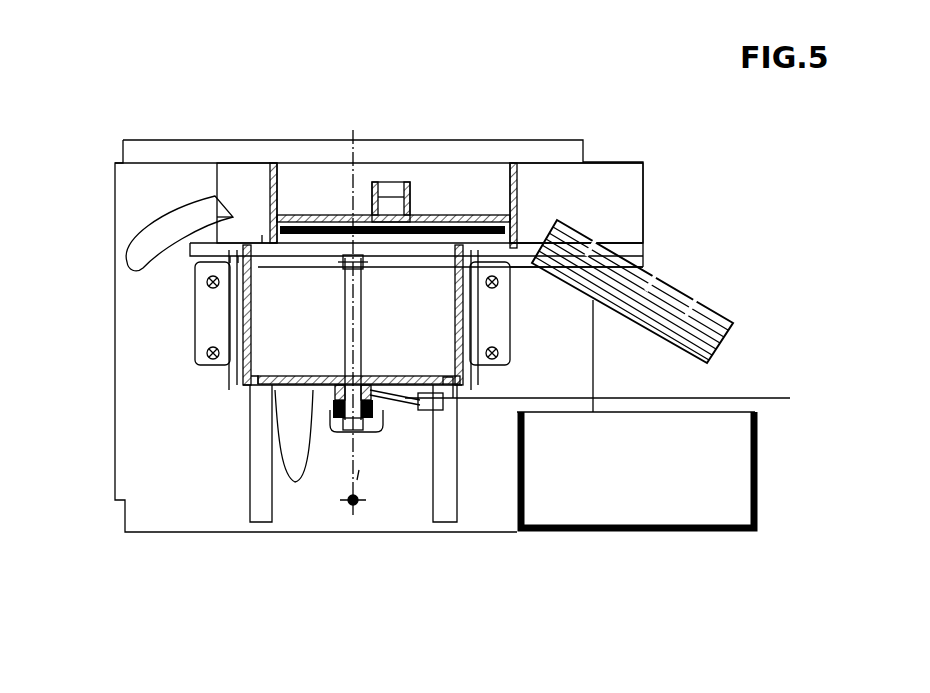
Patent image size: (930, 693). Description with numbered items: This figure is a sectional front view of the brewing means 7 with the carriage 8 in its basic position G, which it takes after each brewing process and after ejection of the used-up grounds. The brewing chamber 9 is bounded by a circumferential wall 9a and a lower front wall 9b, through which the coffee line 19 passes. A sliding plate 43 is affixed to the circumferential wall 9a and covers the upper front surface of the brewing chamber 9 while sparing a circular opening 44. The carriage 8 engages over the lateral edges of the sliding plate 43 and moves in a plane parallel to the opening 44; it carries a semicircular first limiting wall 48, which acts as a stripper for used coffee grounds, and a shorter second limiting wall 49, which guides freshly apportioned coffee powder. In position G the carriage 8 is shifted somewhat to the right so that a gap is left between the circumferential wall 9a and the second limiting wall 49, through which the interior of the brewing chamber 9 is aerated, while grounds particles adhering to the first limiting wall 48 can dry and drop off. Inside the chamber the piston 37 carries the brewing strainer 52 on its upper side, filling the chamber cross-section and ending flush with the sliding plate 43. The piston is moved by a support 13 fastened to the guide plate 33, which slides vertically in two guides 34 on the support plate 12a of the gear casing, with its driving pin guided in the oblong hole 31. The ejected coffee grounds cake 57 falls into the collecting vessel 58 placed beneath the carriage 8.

The brewing means 7 is at (138, 437).
The carriage 8 is at (621, 152).
The brewing chamber 9 is at (312, 344).
The circumferential wall 9a is at (240, 382).
The lower front wall 9b is at (303, 388).
The support plate 12a is at (170, 364).
The support 13 is at (377, 412).
The coffee line 19 is at (618, 396).
The oblong hole 31 is at (300, 463).
The guide plate 33 is at (405, 410).
The guides 34 is at (262, 497).
The piston 37 is at (365, 265).
The sliding plate 43 is at (228, 251).
The opening 44 is at (256, 242).
The first limiting wall 48 is at (517, 176).
The second limiting wall 49 is at (270, 183).
The brewing strainer 52 is at (318, 247).
The coffee grounds cake 57 is at (690, 310).
The collecting vessel 58 is at (760, 460).
The basic position G is at (427, 130).